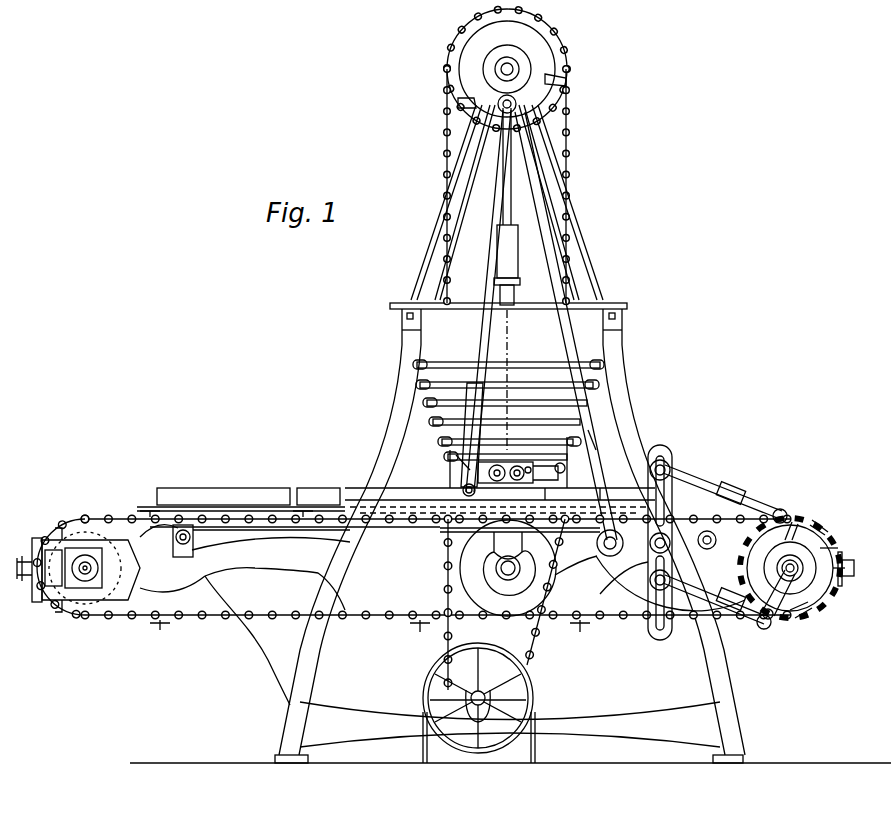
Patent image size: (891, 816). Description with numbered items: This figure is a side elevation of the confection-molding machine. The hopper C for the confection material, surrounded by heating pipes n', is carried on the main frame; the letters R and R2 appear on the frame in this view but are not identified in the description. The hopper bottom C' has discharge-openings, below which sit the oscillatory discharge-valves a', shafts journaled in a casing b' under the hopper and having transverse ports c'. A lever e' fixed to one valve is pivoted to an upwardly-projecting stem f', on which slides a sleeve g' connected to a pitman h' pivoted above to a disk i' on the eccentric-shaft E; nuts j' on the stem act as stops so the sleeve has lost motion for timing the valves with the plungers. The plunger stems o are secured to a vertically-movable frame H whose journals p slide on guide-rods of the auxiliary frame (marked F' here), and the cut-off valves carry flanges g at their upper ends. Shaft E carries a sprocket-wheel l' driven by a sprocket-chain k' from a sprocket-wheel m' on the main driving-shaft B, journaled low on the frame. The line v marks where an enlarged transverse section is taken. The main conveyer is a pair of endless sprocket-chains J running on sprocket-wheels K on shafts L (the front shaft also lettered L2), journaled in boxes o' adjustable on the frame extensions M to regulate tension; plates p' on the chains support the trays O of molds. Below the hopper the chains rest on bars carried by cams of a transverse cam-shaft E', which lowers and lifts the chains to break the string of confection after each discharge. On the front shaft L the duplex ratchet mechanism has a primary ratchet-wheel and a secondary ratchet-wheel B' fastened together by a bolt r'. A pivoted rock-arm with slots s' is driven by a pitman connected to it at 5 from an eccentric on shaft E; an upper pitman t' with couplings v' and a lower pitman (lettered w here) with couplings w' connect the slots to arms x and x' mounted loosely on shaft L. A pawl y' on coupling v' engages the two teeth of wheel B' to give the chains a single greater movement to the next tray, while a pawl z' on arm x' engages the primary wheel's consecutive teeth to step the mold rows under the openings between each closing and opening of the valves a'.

The frame R is at (400, 382).
The eccentric-shaft E is at (478, 69).
The disk i' is at (495, 65).
The sprocket-wheel l' is at (522, 156).
The sprocket-chain k' is at (546, 109).
The standards F' is at (510, 202).
The flange g is at (487, 303).
The pitman h' is at (528, 326).
The journals p is at (517, 193).
The horizontal frame H is at (520, 284).
The nuts j' is at (480, 380).
The hopper C is at (500, 424).
The steam or hot-water pipes n' is at (508, 405).
The sleeve g' is at (480, 435).
The discharge-valves a' is at (505, 465).
The casing b' is at (544, 483).
The transverse ports c' is at (536, 475).
The stem f' is at (459, 449).
The hopper bottom C' is at (571, 472).
The eye v is at (477, 495).
The plunger stems o is at (583, 490).
The trays O is at (310, 490).
The endless sprocket-chains J is at (413, 585).
The shafts L is at (82, 574).
The sprocket-wheels K is at (85, 603).
The boxes o' is at (108, 571).
The extensions M is at (245, 615).
The cam-shaft E' is at (490, 568).
The lever e' is at (512, 567).
The connection point 5 is at (600, 543).
The main driving-shaft B is at (491, 703).
The sprocket-wheel m' is at (437, 703).
The longitudinal slots s' is at (655, 542).
The couplings v' is at (725, 487).
The upper pitman t' is at (730, 484).
The couplings w' is at (717, 617).
The coupling w is at (725, 610).
The secondary ratchet-wheel B' is at (803, 561).
The arm x' is at (792, 577).
The screw or bolt r' is at (790, 568).
The pawl y' is at (800, 513).
The pawl z' is at (778, 606).
The arm x is at (718, 538).
The horizontal plates p' is at (854, 567).
The shaft L2 is at (845, 586).
The frame R2 is at (838, 548).